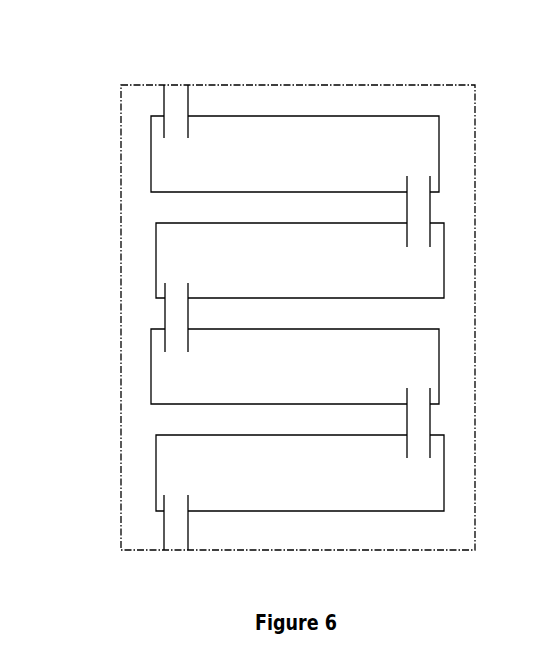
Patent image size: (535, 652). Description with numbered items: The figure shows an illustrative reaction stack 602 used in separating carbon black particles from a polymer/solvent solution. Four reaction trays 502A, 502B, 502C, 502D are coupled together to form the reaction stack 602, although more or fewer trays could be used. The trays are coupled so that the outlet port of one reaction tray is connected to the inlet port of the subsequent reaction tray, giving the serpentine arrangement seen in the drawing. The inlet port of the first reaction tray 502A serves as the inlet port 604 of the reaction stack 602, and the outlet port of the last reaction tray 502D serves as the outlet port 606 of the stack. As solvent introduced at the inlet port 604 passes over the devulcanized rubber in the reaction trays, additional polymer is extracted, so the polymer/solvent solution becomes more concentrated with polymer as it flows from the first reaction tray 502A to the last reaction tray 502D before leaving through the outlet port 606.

The reaction stack 602 is at (442, 85).
The inlet port 604 is at (181, 85).
The outlet port 606 is at (172, 551).
The first reaction tray 502A is at (151, 153).
The second reaction tray 502B is at (156, 262).
The third reaction tray 502C is at (151, 370).
The last reaction tray 502D is at (156, 480).